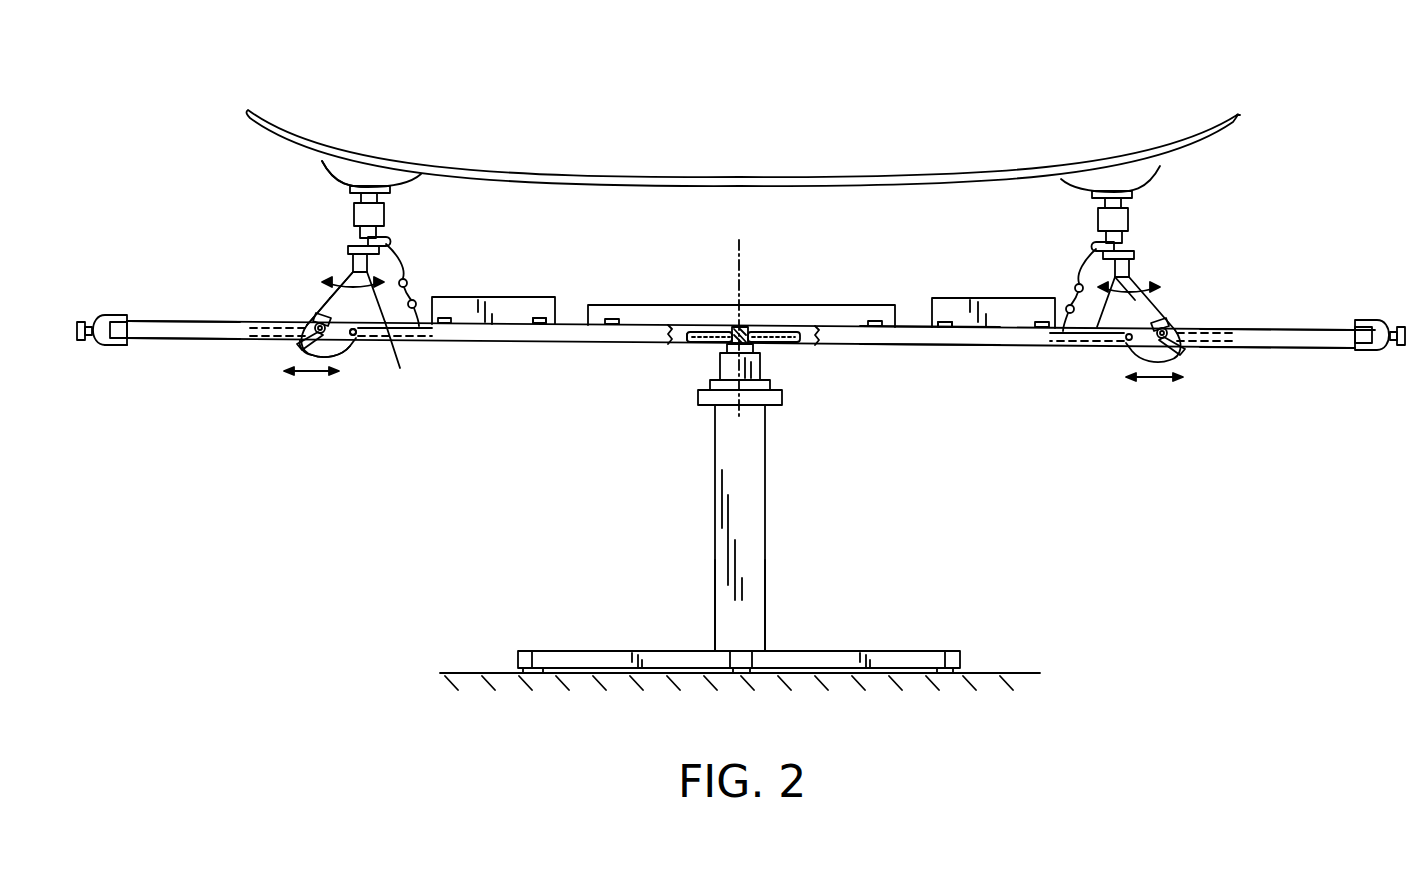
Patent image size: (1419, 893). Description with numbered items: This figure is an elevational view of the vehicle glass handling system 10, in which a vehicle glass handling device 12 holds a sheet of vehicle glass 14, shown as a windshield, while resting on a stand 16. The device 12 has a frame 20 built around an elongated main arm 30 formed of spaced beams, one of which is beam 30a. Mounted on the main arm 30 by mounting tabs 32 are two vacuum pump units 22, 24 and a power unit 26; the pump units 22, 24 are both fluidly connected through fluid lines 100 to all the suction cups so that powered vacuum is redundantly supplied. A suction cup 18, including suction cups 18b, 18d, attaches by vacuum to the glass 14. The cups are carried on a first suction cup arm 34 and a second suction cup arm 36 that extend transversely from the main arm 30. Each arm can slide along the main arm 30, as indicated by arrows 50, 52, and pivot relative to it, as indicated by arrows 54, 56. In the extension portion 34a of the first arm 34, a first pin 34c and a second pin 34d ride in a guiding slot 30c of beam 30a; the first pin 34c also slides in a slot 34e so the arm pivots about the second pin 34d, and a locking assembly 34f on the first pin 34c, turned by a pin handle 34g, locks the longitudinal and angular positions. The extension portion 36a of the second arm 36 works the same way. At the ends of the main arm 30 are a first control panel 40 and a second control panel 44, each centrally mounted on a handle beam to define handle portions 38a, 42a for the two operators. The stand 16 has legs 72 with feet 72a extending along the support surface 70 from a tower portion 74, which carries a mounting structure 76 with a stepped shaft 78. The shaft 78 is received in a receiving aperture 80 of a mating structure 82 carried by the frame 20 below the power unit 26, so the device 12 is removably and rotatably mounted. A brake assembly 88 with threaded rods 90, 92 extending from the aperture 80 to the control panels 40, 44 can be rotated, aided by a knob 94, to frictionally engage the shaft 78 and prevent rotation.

The vehicle glass handling system 10 is at (1272, 68).
The vehicle glass handling device 12 is at (1279, 317).
The vehicle glass 14 is at (830, 176).
The stand 16 is at (772, 549).
The suction cup 18 is at (417, 192).
The suction cup 18b is at (325, 174).
The suction cup 18d is at (1150, 182).
The frame 20 is at (904, 352).
The vacuum pump unit 22 is at (507, 313).
The vacuum pump unit 24 is at (1010, 322).
The power unit 26 is at (833, 312).
The main arm 30 is at (195, 316).
The elongated beam 30a is at (172, 334).
The guiding slot 30c is at (287, 334).
The mounting tab 32 is at (538, 330).
The first suction cup arm 34 is at (352, 262).
The extension portion 34a is at (330, 303).
The first pin 34c is at (308, 320).
The second pin 34d is at (360, 340).
The slot 34e is at (322, 320).
The locking assembly 34f is at (340, 338).
The pin handle 34g is at (288, 343).
The second suction cup arm 36 is at (1130, 266).
The extension portion 36a is at (1148, 345).
The handle portion 38a is at (120, 320).
The first control panel 40 is at (100, 350).
The handle portion 42a is at (1363, 352).
The second control panel 44 is at (1379, 316).
The arrow 50 is at (315, 373).
The arrow 52 is at (1157, 380).
The arrow 54 is at (404, 358).
The arrow 56 is at (1140, 300).
The support surface 70 is at (1003, 675).
The leg 72 is at (602, 658).
The foot 72a is at (530, 650).
The tower portion 74 is at (756, 502).
The mounting structure 76 is at (730, 378).
The stepped shaft 78 is at (744, 330).
The receiving aperture 80 is at (735, 327).
The mating structure 82 is at (763, 328).
The brake assembly 88 is at (705, 357).
The elongated rod 90 is at (690, 345).
The elongated rod 92 is at (793, 343).
The knob 94 is at (80, 320).
The fluid line 100 is at (412, 280).